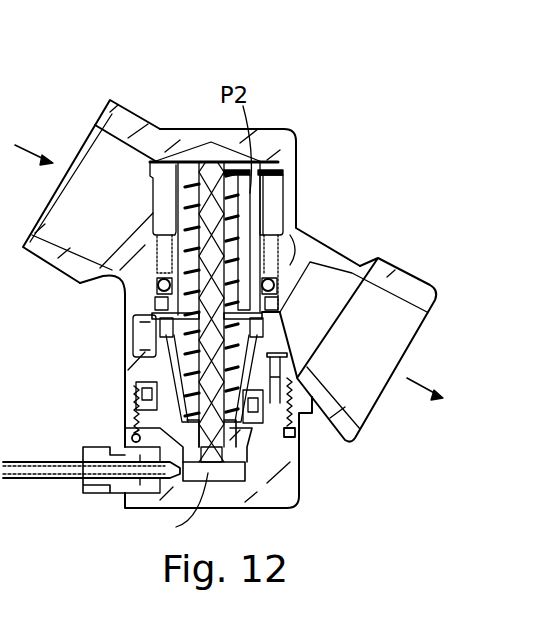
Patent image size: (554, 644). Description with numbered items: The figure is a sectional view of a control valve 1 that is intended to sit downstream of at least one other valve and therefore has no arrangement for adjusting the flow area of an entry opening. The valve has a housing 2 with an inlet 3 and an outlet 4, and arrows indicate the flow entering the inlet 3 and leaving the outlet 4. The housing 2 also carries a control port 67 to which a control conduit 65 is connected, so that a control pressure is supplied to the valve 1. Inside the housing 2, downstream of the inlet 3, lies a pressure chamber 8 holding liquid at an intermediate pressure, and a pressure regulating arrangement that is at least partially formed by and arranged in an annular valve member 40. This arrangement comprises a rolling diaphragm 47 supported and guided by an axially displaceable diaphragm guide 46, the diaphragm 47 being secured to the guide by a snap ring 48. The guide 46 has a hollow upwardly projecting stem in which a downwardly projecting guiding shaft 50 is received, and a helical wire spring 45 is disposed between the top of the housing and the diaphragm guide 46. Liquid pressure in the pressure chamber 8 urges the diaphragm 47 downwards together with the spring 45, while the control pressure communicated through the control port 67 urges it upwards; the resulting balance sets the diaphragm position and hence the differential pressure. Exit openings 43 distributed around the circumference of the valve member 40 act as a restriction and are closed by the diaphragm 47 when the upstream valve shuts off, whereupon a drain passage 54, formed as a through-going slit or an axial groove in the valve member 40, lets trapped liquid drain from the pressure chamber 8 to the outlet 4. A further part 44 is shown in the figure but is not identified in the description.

The control valve 1 is at (283, 113).
The housing 2 is at (292, 196).
The inlet 3 is at (98, 158).
The outlet 4 is at (368, 383).
The pressure chamber 8 is at (170, 281).
The annular valve member 40 is at (290, 243).
The exit openings 43 is at (138, 330).
The O-ring seal 44 is at (150, 282).
The helical wire spring 45 is at (283, 168).
The diaphragm guide 46 is at (142, 362).
The rolling diaphragm 47 is at (130, 380).
The snap ring 48 is at (253, 447).
The guiding shaft 50 is at (212, 212).
The drain passage 54 is at (158, 308).
The control conduit 65 is at (50, 478).
The control port 67 is at (142, 492).